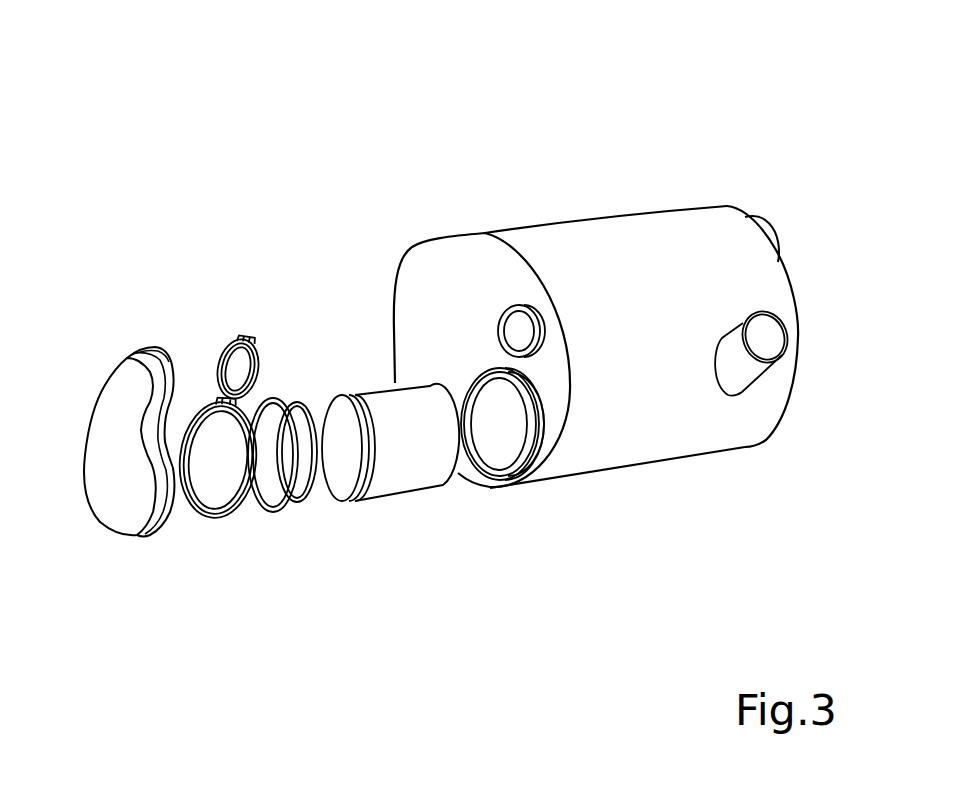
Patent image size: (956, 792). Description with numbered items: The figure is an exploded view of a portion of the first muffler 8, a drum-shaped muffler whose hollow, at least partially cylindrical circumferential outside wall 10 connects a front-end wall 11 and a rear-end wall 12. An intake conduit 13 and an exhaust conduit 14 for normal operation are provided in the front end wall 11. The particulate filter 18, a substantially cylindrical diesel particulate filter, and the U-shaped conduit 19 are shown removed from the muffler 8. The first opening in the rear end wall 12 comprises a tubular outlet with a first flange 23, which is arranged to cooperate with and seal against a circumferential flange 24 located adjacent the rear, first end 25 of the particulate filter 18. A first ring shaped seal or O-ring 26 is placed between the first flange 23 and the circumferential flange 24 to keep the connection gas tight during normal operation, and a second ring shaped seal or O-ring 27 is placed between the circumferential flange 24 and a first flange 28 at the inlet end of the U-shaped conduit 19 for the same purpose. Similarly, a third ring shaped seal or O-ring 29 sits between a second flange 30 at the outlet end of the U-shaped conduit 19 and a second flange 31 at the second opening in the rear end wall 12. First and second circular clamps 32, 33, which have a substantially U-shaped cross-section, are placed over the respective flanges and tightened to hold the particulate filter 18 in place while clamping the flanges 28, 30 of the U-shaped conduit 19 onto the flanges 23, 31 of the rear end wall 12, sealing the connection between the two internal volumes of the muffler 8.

The first muffler 8 is at (422, 220).
The circumferential outside wall 10 is at (585, 230).
The front-end wall 11 is at (770, 438).
The rear-end wall 12 is at (420, 290).
The intake conduit 13 is at (808, 352).
The exhaust conduit 14 is at (797, 228).
The particulate filter 18 is at (403, 482).
The U-shaped conduit 19 is at (120, 512).
The first flange 23 is at (502, 473).
The circumferential flange 24 is at (343, 500).
The first end 25 is at (318, 498).
The first ring shaped seal 26 is at (352, 407).
The second ring shaped seal 27 is at (288, 513).
The first flange of the U-shaped conduit 28 is at (170, 525).
The third ring shaped seal 29 is at (178, 363).
The second flange of the U-shaped conduit 30 is at (165, 347).
The second flange 31 is at (510, 303).
The first circular clamp 32 is at (233, 518).
The second circular clamp 33 is at (252, 338).